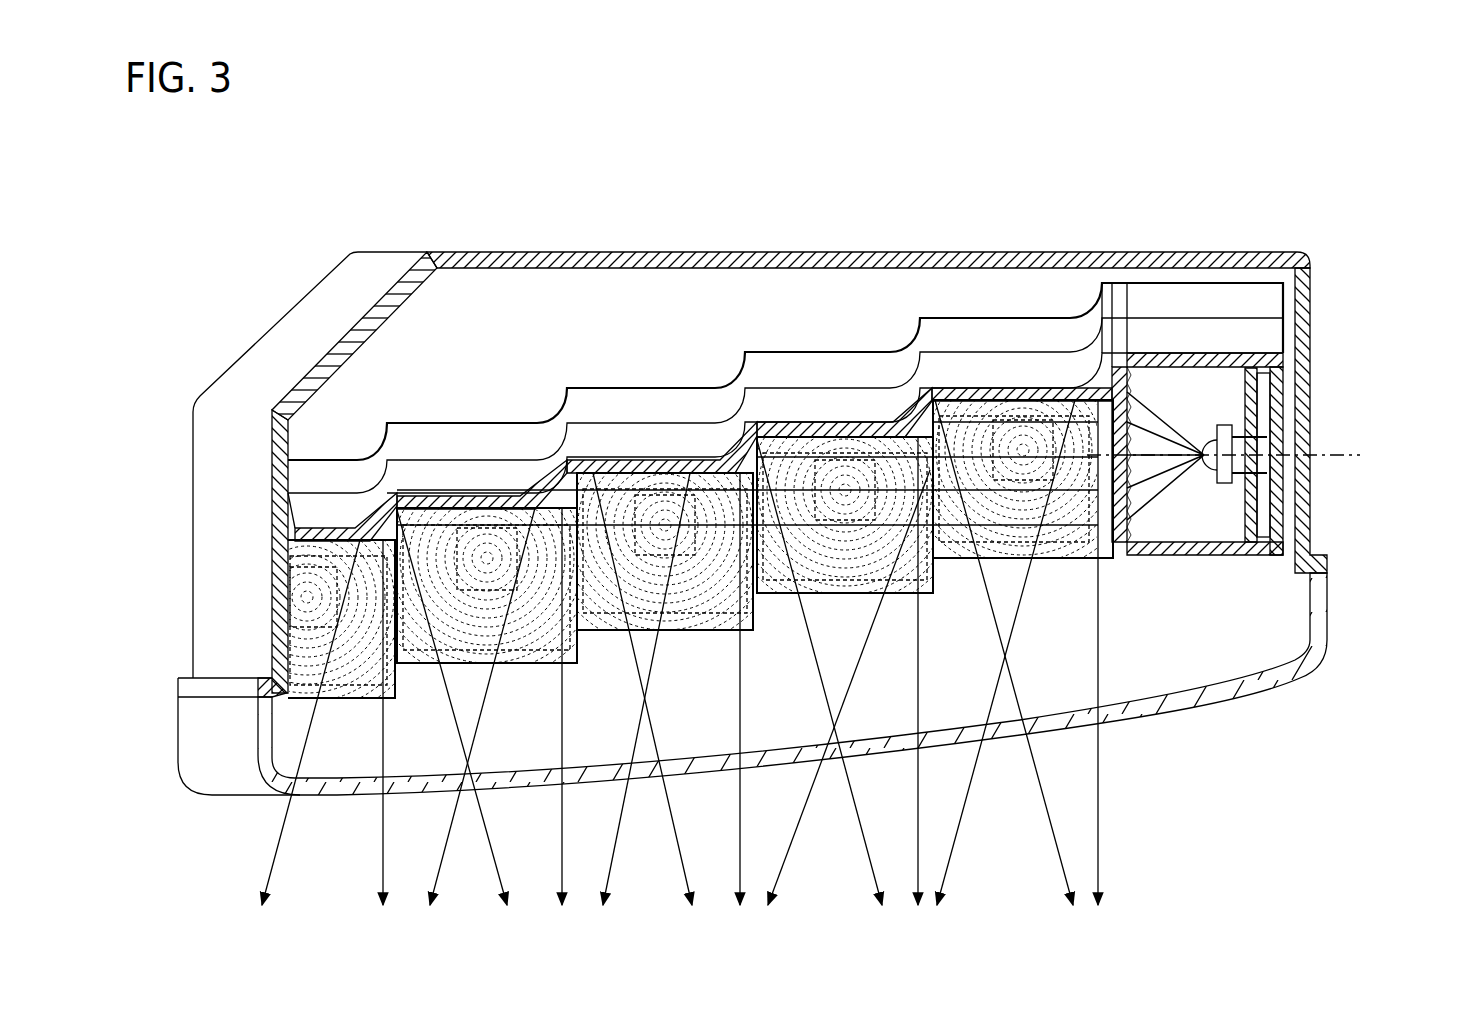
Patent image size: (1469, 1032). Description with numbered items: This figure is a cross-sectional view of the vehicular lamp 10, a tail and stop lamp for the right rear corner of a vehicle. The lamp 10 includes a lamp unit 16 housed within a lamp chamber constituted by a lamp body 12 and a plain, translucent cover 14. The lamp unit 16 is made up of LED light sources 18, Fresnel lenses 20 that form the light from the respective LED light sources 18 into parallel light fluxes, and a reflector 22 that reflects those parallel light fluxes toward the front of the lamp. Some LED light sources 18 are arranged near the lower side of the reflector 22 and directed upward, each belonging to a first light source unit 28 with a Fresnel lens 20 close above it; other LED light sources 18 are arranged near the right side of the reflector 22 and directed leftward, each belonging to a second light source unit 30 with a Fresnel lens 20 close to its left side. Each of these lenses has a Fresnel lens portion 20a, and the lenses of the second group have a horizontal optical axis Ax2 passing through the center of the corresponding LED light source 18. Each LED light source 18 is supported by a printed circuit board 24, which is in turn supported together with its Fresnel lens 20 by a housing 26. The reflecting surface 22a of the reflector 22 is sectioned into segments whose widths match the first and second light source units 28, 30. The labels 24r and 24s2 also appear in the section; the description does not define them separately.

The vehicular lamp 10 is at (270, 226).
The lamp body 12 is at (517, 250).
The translucent cover 14 is at (330, 798).
The lamp unit 16 is at (695, 318).
The LED light source 18 is at (488, 610).
The Fresnel lens 20 is at (468, 628).
The Fresnel lens portion 20a is at (1127, 450).
The reflector 22 is at (625, 380).
The reflecting surface 22a is at (608, 482).
The printed circuit board 24 is at (1258, 400).
The reflector rear portion 24r is at (788, 563).
The reflector second reflecting surface 24s2 is at (900, 563).
The housing 26 is at (1284, 505).
The first light source unit 28 is at (934, 602).
The second light source unit 30 is at (1234, 349).
The optical axis Ax2 is at (1335, 455).